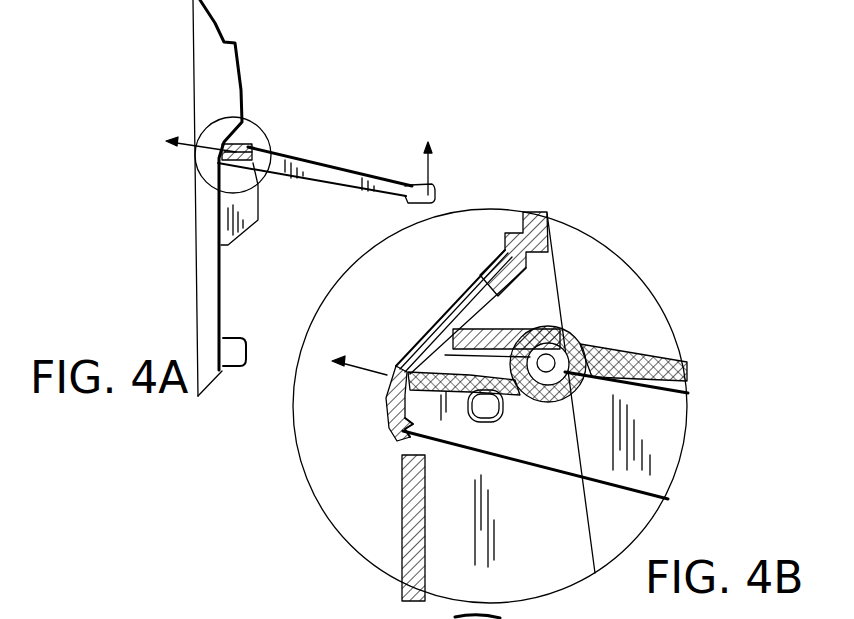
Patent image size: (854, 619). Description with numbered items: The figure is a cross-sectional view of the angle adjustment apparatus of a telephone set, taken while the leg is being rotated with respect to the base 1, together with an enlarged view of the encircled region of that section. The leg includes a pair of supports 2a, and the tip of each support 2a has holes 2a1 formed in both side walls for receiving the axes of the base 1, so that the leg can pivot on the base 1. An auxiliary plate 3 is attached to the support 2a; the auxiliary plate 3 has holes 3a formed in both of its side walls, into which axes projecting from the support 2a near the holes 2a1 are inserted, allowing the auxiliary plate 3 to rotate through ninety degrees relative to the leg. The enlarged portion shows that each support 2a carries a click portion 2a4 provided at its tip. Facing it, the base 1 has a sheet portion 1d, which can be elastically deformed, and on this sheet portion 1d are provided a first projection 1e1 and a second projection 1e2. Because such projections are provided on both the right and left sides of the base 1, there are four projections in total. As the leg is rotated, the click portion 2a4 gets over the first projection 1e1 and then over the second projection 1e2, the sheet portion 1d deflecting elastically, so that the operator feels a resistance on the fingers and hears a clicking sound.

In FIG. 4A, the base 1 is at (194, 252).
In FIG. 4B, the base 1 is at (403, 523).
In FIG. 4B, the sheet portion 1d is at (449, 300).
In FIG. 4B, the first projection 1e1 is at (386, 398).
In FIG. 4B, the second projection 1e2 is at (388, 433).
In FIG. 4A, the support 2a is at (336, 163).
In FIG. 4B, the support 2a is at (600, 345).
In FIG. 4B, the hole 2a1 is at (503, 416).
In FIG. 4B, the click portion 2a4 is at (580, 328).
In FIG. 4B, the auxiliary plate 3 is at (455, 332).
In FIG. 4B, the hole 3a is at (640, 388).